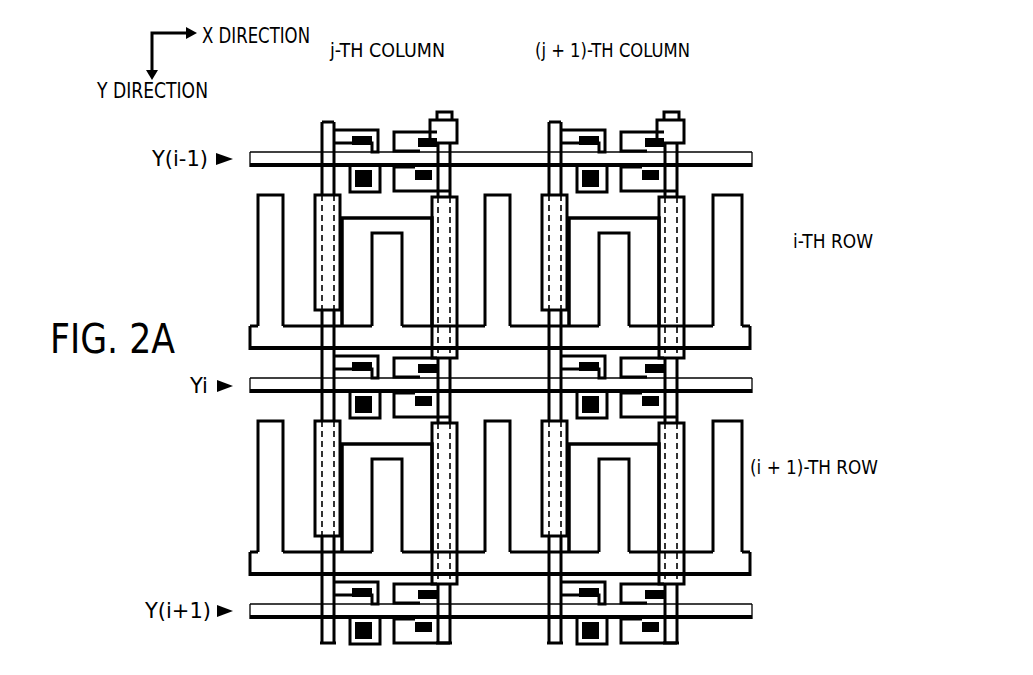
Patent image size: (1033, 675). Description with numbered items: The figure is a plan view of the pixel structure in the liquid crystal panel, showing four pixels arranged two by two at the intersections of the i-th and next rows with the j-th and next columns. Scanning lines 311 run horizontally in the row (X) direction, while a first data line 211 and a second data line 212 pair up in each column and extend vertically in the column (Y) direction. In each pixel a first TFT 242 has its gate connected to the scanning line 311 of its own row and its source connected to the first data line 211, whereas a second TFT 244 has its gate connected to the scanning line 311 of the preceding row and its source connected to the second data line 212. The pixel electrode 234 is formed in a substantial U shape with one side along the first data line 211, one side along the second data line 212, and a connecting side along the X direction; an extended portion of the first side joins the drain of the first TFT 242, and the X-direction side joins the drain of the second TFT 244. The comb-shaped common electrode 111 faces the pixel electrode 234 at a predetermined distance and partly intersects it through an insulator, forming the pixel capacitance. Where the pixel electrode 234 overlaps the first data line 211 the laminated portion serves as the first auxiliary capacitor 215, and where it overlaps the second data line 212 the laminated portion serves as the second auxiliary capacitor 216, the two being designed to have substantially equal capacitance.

The common electrode 111 is at (745, 306).
The first data line 211 is at (455, 170).
The second data line 212 is at (322, 142).
The first auxiliary capacitor 215 is at (452, 218).
The second auxiliary capacitor 216 is at (316, 240).
The pixel electrode 234 is at (350, 206).
The first thin film transistor 242 is at (440, 375).
The second thin film transistor 244 is at (352, 112).
The scanning line 311 is at (740, 170).